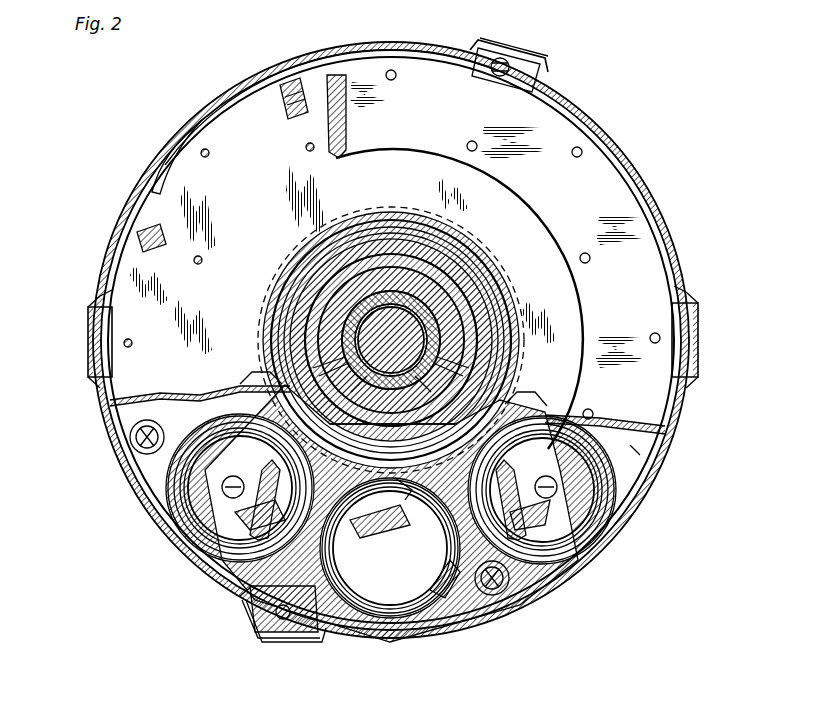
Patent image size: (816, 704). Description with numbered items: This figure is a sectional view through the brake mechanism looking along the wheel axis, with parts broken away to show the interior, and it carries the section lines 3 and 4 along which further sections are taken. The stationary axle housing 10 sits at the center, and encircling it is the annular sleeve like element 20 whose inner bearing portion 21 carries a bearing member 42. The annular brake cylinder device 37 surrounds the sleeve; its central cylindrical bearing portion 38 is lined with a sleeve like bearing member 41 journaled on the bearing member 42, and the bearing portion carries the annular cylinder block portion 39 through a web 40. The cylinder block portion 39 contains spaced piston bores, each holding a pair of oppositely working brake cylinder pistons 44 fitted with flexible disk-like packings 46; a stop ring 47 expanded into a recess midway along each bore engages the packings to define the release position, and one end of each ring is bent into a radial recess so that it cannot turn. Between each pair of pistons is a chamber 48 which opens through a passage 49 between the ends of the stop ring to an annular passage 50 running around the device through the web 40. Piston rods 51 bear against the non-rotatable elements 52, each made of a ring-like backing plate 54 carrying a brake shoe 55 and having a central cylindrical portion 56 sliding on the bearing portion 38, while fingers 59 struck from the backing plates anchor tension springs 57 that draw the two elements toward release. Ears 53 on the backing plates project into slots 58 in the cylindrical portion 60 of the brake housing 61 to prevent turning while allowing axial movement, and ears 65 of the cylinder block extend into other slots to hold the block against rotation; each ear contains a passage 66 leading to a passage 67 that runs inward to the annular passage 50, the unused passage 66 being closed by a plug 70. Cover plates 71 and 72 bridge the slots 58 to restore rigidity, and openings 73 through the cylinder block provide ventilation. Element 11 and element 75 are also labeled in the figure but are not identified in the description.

The section line 3— 3 is at (342, 406).
The section line 4— 4 is at (506, 648).
The housing 10 is at (368, 331).
The sleeve 11 is at (350, 336).
The annular sleeve like element 20 is at (338, 262).
The inner bearing portion 21 is at (390, 243).
The annular brake cylinder device 37 is at (225, 576).
The central cylindrical bearing portion 38 is at (432, 222).
The annular cylinder block portion 39 is at (200, 395).
The web 40 is at (389, 383).
The sleeve like bearing member 41 is at (347, 248).
The bearing member 42 is at (372, 228).
The brake cylinder pistons 44 is at (135, 399).
The packing 46 is at (440, 588).
The stop ring 47 is at (300, 488).
The chamber 48 is at (200, 533).
The passage 49 is at (395, 505).
The annular passage 50 is at (412, 386).
The brake cylinder piston rods 51 is at (228, 485).
The non-rotatable elements 52 is at (643, 256).
The ears 53 is at (100, 335).
The backing plate 54 is at (250, 108).
The brake shoe 55 is at (341, 75).
The cylindrical portion 56 is at (391, 362).
The tension spring 57 is at (292, 85).
The slots 58 is at (478, 46).
The finger 59 is at (280, 92).
The cylindrical portion 60 is at (216, 104).
The brake housing 61 is at (182, 142).
The ears 65 is at (536, 70).
The passage 66 is at (275, 628).
The passage 67 is at (318, 634).
The plug 70 is at (500, 58).
The cover plate 71 is at (522, 52).
The cover plate 72 is at (90, 352).
The opening 73 is at (256, 380).
The port 75 is at (402, 486).